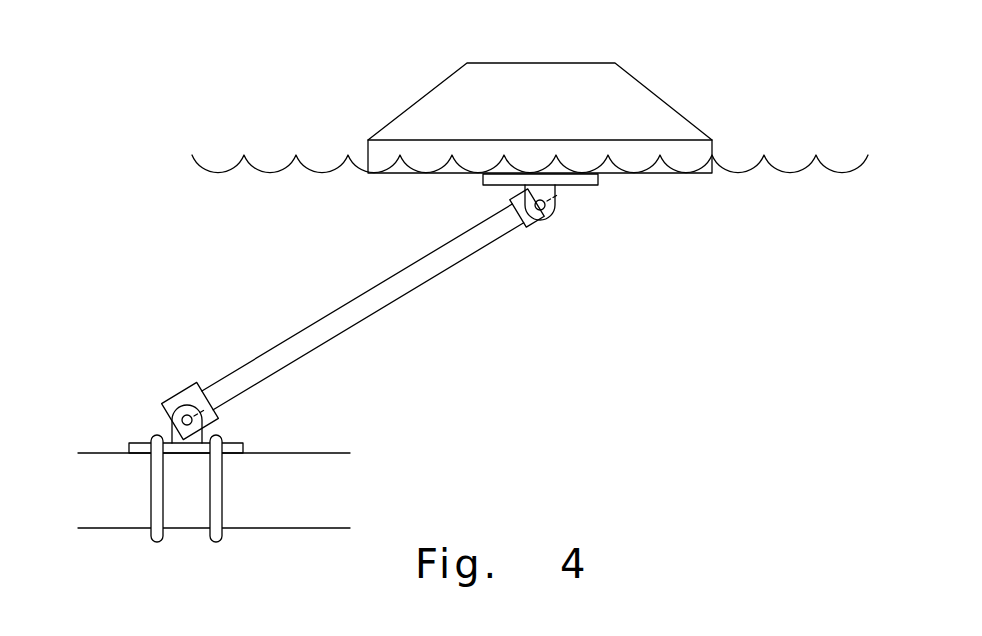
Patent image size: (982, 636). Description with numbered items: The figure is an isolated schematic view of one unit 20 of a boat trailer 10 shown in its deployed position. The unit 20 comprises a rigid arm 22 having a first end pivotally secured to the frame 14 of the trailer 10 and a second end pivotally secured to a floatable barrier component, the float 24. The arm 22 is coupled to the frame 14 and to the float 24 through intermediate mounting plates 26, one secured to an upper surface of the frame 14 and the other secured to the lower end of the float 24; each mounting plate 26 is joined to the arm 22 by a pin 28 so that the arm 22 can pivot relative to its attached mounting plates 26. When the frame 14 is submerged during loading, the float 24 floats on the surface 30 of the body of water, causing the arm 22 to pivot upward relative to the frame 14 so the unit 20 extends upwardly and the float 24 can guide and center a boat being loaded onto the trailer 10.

The trailer 10 is at (350, 438).
The frame 14 is at (100, 452).
The unit 20 is at (419, 96).
The rigid arm 22 is at (445, 272).
The float 24 is at (660, 99).
The mounting plate 26 is at (587, 186).
The pin 28 is at (548, 213).
The surface 30 is at (800, 174).